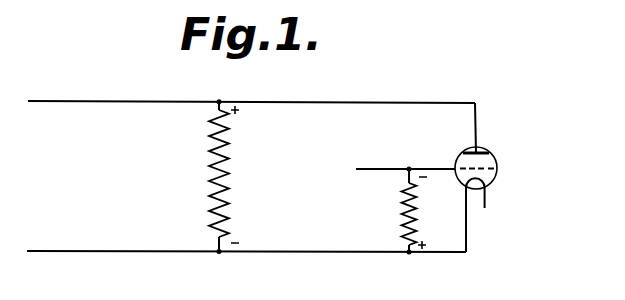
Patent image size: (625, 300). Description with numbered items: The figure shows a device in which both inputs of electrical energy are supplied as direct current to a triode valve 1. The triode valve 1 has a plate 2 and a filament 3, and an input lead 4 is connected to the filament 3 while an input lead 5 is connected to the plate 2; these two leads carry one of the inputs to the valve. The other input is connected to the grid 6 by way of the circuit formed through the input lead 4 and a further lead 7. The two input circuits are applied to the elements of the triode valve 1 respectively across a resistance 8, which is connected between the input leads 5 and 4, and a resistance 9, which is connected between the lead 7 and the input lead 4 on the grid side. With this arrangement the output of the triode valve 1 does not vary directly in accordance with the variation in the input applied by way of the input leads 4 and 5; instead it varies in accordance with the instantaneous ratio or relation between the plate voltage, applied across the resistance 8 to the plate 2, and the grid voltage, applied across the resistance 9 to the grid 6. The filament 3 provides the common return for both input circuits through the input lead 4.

The triode valve 1 is at (497, 155).
The plate 2 is at (482, 148).
The filament 3 is at (485, 199).
The input lead 4 is at (128, 249).
The input lead 5 is at (153, 100).
The grid 6 is at (493, 168).
The lead 7 is at (378, 164).
The resistance 8 is at (210, 170).
The resistance 9 is at (402, 212).